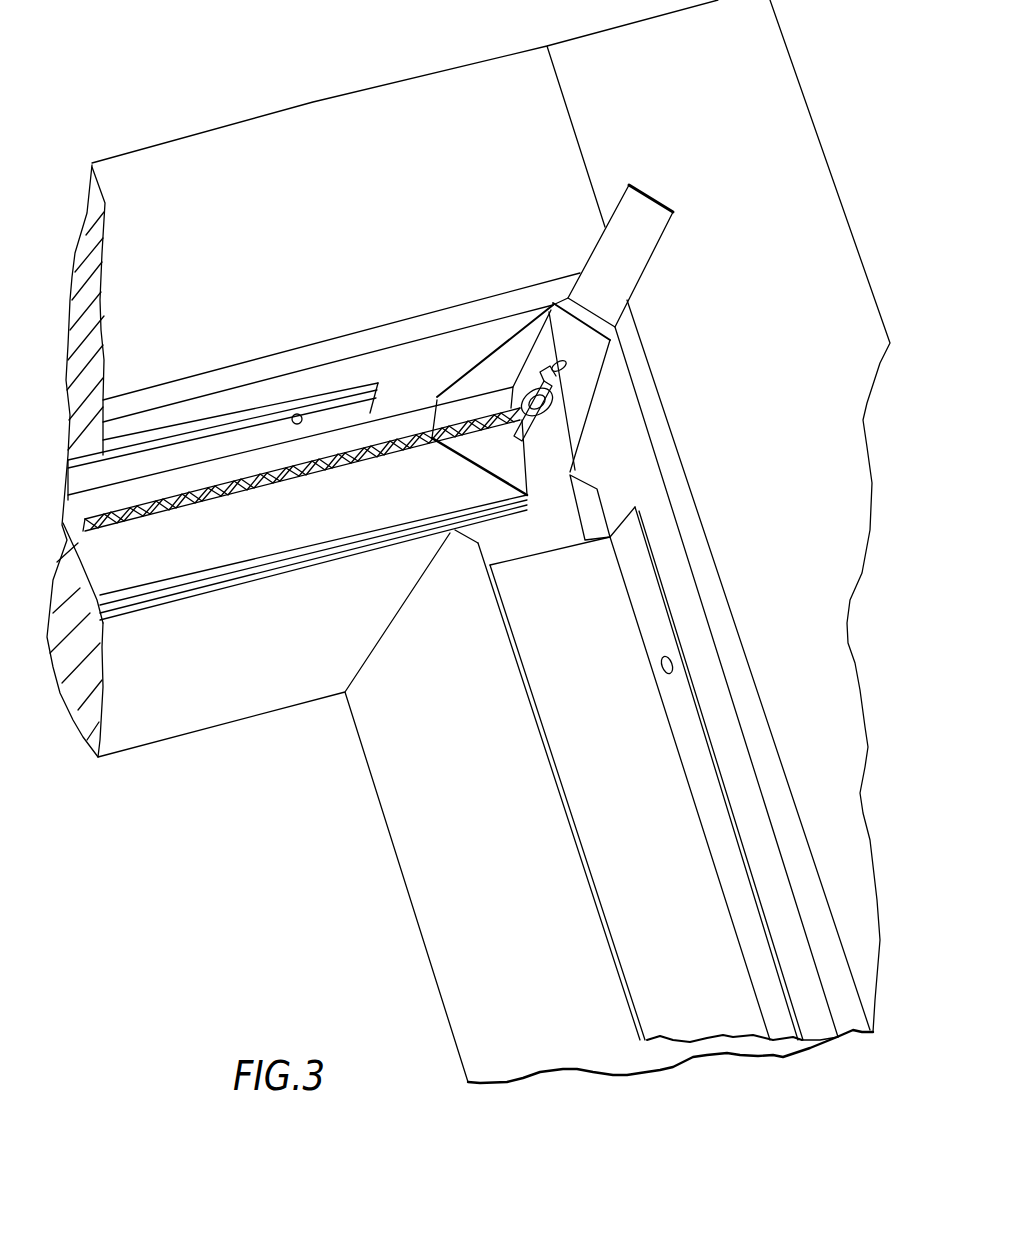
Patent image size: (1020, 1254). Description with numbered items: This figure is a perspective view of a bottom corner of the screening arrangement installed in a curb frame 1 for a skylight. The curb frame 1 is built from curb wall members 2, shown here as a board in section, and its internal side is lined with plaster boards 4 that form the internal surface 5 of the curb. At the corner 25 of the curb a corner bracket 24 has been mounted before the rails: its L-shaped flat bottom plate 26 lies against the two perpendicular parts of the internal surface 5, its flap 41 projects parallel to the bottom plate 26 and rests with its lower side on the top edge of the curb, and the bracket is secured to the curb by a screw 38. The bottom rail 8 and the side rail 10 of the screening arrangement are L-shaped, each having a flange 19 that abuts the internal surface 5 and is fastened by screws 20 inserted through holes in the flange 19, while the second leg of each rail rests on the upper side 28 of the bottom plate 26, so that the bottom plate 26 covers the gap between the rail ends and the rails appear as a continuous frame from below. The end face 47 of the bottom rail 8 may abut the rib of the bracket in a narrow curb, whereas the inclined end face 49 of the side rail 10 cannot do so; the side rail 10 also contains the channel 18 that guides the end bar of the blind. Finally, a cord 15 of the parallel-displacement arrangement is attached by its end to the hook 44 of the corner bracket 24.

The curb frame 1 is at (820, 105).
The curb wall member 2 is at (302, 127).
The plaster board 4 is at (441, 320).
The internal surface 5 is at (353, 355).
The bottom rail 8 is at (676, 873).
The side rail 10 is at (164, 568).
The cord 15 is at (267, 480).
The channel 18 is at (497, 510).
The flange 19 is at (168, 448).
The screw 20 is at (297, 413).
The corner bracket 24 is at (655, 304).
The corner 25 is at (582, 225).
The bottom plate 26 is at (475, 560).
The upper side 28 is at (549, 473).
The screw 38 is at (565, 328).
The flap 41 is at (680, 233).
The hook 44 is at (552, 397).
The end face 47 is at (560, 550).
The inclined end face 49 is at (447, 453).